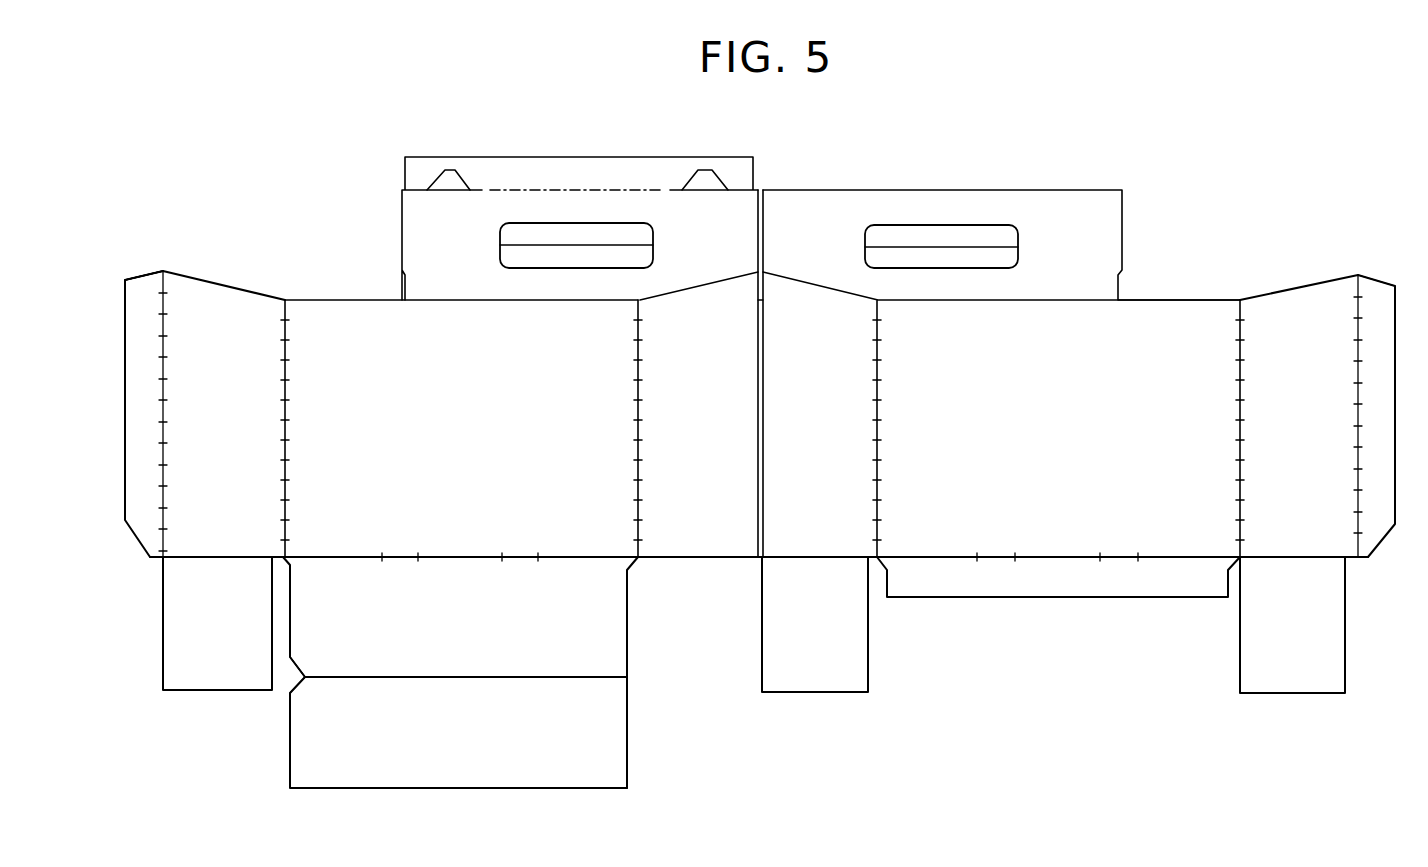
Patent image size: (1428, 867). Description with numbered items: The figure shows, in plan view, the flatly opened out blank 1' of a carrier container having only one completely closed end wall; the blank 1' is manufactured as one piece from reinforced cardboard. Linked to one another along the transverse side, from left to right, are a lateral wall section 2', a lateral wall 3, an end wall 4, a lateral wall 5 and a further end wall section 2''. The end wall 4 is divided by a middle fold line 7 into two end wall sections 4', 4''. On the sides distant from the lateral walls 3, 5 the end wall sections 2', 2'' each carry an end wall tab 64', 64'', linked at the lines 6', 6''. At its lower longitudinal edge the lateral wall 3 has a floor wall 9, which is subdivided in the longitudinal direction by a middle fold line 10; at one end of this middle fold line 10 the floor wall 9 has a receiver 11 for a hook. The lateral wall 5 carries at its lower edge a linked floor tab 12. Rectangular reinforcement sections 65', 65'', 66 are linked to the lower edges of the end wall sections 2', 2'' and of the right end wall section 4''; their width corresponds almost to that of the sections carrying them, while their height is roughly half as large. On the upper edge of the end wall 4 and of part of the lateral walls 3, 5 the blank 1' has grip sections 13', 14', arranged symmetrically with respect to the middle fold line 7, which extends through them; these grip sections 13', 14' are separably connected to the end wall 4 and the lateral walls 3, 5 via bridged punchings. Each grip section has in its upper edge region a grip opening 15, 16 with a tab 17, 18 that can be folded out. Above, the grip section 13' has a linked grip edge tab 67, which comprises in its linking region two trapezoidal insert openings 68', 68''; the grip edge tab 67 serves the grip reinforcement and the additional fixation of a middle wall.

The blank 1' is at (240, 199).
The lateral wall section 2' is at (205, 414).
The end wall section 2'' is at (1317, 416).
The lateral wall 3 is at (461, 434).
The end wall 4 is at (838, 400).
The end wall section 4' is at (696, 414).
The end wall section 4'' is at (1001, 414).
The lateral wall 5 is at (1061, 434).
The linking line 6' is at (184, 414).
The linking line 6'' is at (1331, 416).
The middle fold line 7 is at (766, 313).
The floor wall 9 is at (519, 612).
The middle fold line 10 is at (433, 675).
The receiver 11 is at (299, 682).
The floor tab 12 is at (1070, 578).
The grip section 13' is at (580, 228).
The grip section 14' is at (1001, 245).
The grip opening 15 is at (530, 258).
The grip opening 16 is at (938, 258).
The tab 17 is at (607, 231).
The tab 18 is at (947, 237).
The end wall tab 64' is at (133, 320).
The end wall tab 64'' is at (1389, 321).
The reinforcement section 65' is at (217, 623).
The reinforcement section 65'' is at (1292, 625).
The reinforcement section 66 is at (804, 637).
The grip edge tab 67 is at (574, 176).
The insert opening 68' is at (440, 155).
The insert opening 68'' is at (712, 155).